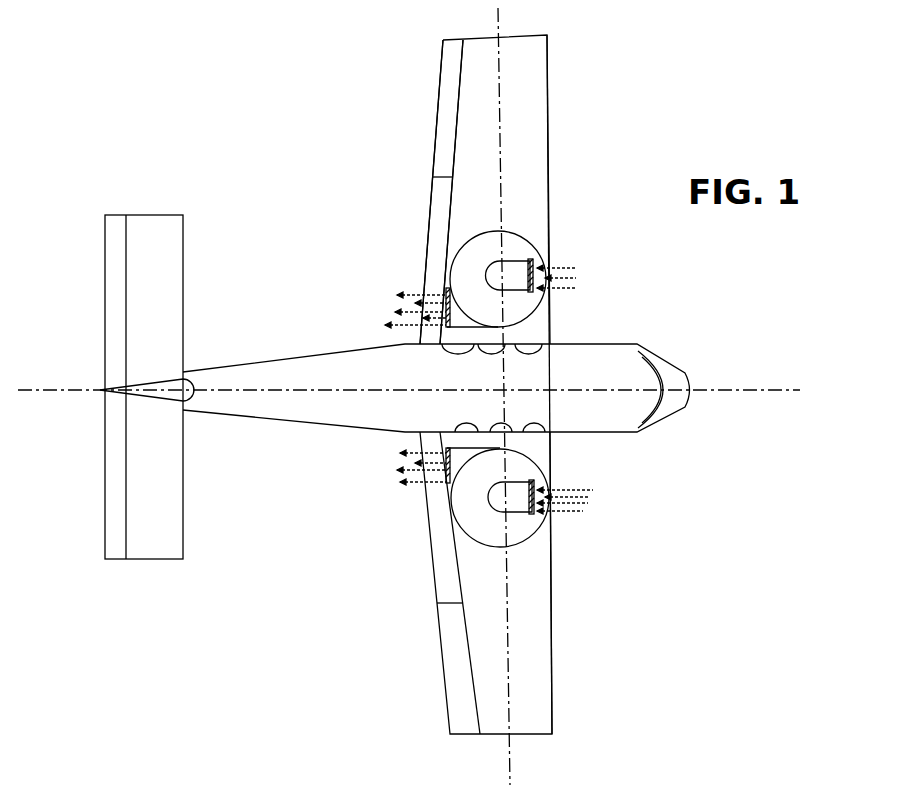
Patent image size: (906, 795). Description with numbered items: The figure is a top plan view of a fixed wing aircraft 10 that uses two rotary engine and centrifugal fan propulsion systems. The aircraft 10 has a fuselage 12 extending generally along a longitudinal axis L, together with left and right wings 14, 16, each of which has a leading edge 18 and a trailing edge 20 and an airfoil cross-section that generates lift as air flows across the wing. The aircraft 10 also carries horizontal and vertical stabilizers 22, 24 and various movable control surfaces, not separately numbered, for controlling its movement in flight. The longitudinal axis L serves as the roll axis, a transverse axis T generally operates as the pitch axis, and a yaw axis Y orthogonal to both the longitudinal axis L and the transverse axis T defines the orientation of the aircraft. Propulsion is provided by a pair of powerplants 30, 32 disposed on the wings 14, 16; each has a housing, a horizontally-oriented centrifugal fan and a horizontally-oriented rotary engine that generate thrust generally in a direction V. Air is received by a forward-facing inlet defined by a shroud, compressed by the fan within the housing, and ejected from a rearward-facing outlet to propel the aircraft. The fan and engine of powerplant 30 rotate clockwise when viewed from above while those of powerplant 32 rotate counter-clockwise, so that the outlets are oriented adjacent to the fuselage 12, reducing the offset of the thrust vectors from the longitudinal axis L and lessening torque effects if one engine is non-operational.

The fixed wing aircraft 10 is at (140, 131).
The fuselage 12 is at (290, 357).
The left wing 14 is at (437, 127).
The right wing 16 is at (440, 645).
The leading edge 18 is at (548, 112).
The trailing edge 20 is at (428, 232).
The horizontal stabilizer 22 is at (104, 297).
The vertical stabilizer 24 is at (167, 380).
The first powerplant 30 is at (484, 254).
The second powerplant 32 is at (499, 512).
The longitudinal axis L is at (72, 390).
The thrust direction V is at (390, 311).
The transverse axis T is at (508, 773).
The yaw axis Y is at (500, 390).